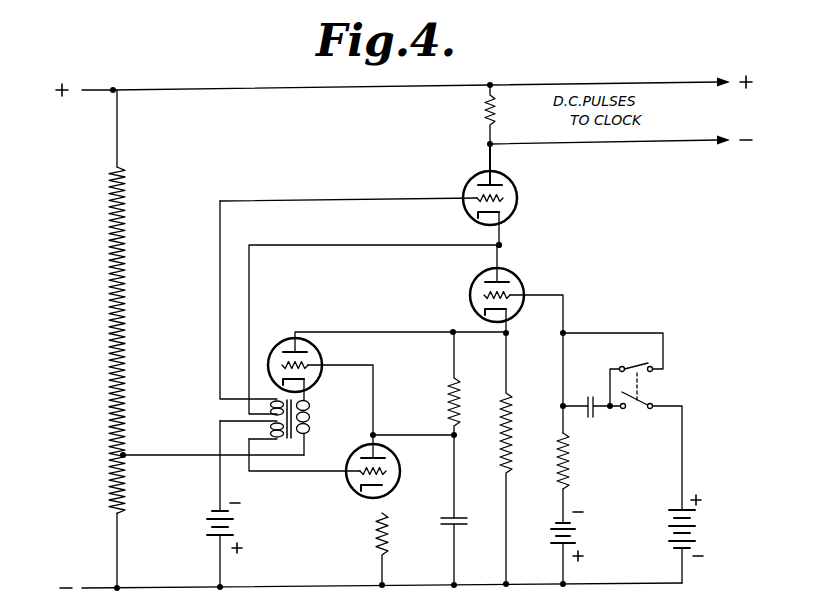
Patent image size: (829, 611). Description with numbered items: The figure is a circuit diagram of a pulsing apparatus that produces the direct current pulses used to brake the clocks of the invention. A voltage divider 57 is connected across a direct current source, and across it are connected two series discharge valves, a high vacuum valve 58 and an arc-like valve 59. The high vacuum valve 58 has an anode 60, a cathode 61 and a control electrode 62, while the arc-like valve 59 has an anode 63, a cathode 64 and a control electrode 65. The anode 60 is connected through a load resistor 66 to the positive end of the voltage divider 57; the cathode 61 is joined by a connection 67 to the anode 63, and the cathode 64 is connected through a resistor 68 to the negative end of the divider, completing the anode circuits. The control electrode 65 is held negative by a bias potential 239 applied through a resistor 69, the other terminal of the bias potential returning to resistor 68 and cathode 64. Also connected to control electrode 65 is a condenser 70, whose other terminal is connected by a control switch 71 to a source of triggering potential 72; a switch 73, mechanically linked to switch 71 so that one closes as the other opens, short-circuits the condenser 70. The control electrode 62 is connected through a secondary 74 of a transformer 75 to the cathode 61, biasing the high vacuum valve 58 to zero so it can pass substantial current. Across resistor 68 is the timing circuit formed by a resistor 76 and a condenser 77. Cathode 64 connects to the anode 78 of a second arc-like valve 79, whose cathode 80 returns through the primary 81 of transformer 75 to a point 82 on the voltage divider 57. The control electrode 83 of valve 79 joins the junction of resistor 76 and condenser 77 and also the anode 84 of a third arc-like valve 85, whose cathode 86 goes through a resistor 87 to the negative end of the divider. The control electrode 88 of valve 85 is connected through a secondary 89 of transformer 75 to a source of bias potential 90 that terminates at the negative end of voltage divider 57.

The voltage divider 57 is at (111, 330).
The point on the voltage divider 82 is at (126, 457).
The source of bias potential 90 is at (207, 528).
The secondary of transformer 74 is at (270, 407).
The secondary of transformer 89 is at (270, 429).
The transformer 75 is at (290, 447).
The primary of transformer 81 is at (311, 418).
The anode 78 is at (301, 357).
The control electrode 83 is at (283, 353).
The second arc-like valve 79 is at (322, 358).
The cathode 80 is at (308, 379).
The third arc-like valve 85 is at (377, 476).
The anode 84 is at (395, 457).
The control electrode 88 is at (353, 460).
The cathode 86 is at (388, 486).
The resistor 87 is at (377, 537).
The condenser 77 is at (447, 528).
The resistor 76 is at (448, 400).
The resistor 68 is at (513, 410).
The load resistor 66 is at (484, 109).
The high vacuum valve 58 is at (386, 188).
The anode 60 is at (482, 183).
The control electrode 62 is at (475, 204).
The cathode 61 is at (508, 214).
The connection 67 is at (502, 246).
The arc-like valve 59 is at (496, 300).
The anode 63 is at (512, 281).
The control electrode 65 is at (512, 296).
The cathode 64 is at (510, 312).
The switch 73 is at (639, 366).
The control switch 71 is at (650, 401).
The condenser 70 is at (597, 418).
The resistor 69 is at (570, 458).
The bias potential 239 is at (576, 536).
The source of triggering potential 72 is at (695, 531).